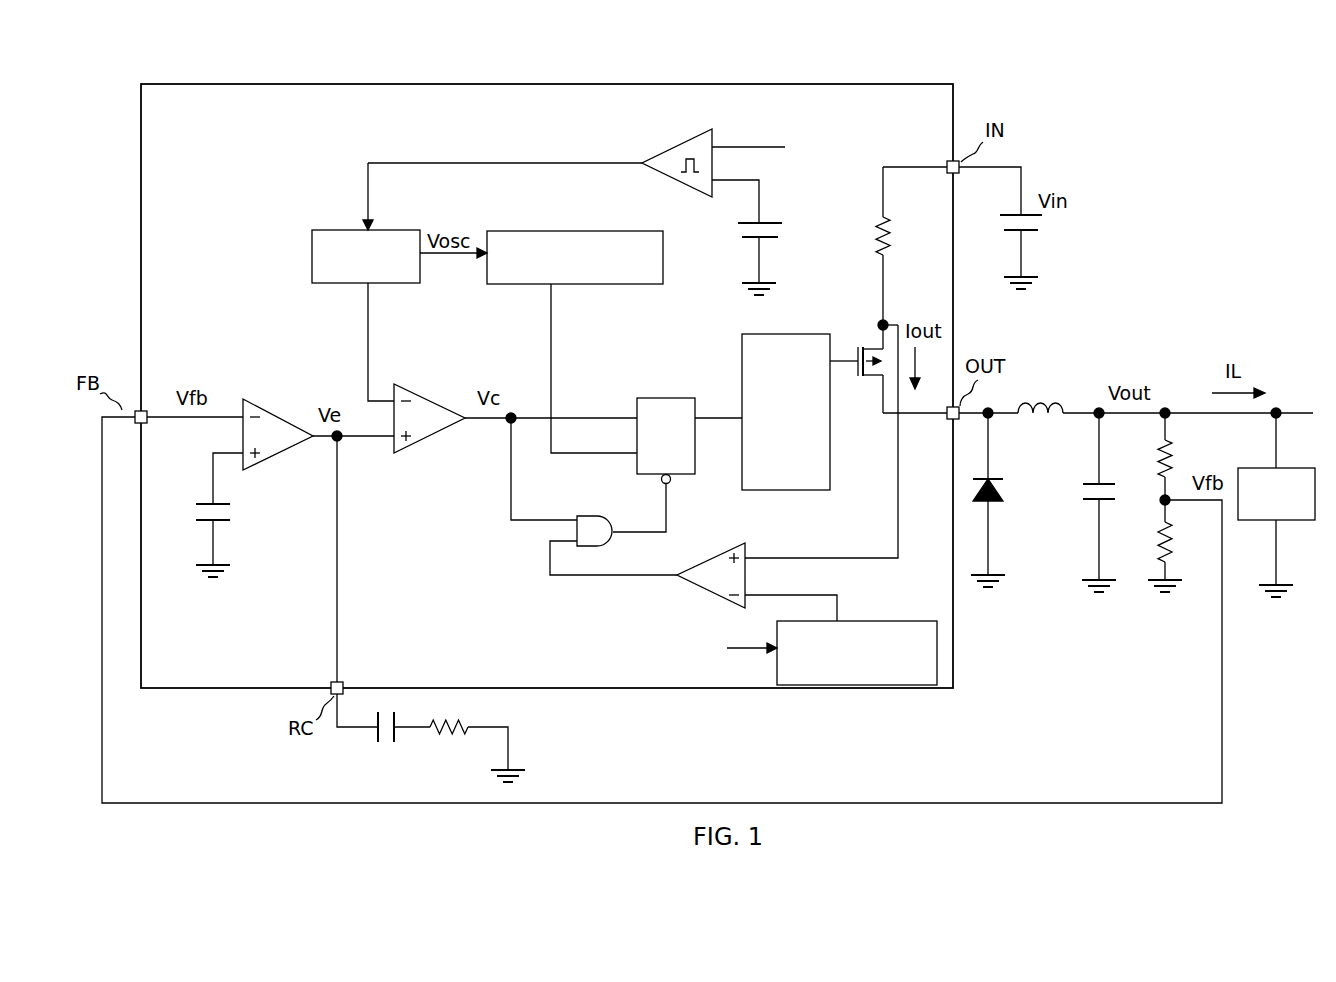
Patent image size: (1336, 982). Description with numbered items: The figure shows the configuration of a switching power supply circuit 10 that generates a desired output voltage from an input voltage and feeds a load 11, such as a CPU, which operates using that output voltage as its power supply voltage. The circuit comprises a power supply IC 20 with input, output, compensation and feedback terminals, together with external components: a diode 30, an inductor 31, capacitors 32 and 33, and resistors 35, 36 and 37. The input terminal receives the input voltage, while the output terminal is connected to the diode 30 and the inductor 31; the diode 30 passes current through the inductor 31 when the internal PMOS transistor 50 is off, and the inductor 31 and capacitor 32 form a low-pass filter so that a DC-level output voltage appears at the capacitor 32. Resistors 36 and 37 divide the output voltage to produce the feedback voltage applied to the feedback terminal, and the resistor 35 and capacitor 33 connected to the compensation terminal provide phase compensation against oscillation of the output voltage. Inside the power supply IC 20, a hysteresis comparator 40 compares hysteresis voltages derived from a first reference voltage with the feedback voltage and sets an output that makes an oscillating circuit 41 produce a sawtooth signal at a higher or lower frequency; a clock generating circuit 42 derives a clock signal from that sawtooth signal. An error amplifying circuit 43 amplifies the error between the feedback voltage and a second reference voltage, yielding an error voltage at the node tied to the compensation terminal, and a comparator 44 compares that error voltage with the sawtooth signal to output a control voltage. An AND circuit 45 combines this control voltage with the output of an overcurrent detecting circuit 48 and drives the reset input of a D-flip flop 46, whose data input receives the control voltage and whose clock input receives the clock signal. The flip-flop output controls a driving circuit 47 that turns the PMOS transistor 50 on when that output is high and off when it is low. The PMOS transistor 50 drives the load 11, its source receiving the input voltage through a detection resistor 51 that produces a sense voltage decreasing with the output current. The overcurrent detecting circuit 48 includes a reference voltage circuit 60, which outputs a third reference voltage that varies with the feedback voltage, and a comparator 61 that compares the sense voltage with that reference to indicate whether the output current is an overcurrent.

The switching power supply circuit 10 is at (1167, 136).
The load 11 is at (1292, 470).
The power supply IC 20 is at (702, 84).
The diode 30 is at (996, 518).
The inductor 31 is at (1048, 426).
The capacitor 32 is at (1112, 484).
The capacitor 33 is at (374, 743).
The resistor 35 is at (438, 741).
The resistor 36 is at (1177, 470).
The resistor 37 is at (1159, 559).
The hysteresis comparator 40 is at (678, 152).
The oscillating circuit 41 is at (311, 228).
The clock generating circuit 42 is at (488, 228).
The error amplifying circuit 43 is at (275, 459).
The comparator 44 is at (398, 382).
The AND circuit 45 is at (581, 517).
The D-flip flop 46 is at (698, 478).
The driving circuit 47 is at (794, 332).
The overcurrent detecting circuit 48 is at (662, 616).
The PMOS transistor 50 is at (866, 382).
The resistor 51 is at (893, 221).
The reference voltage circuit 60 is at (905, 620).
The comparator 61 is at (754, 552).